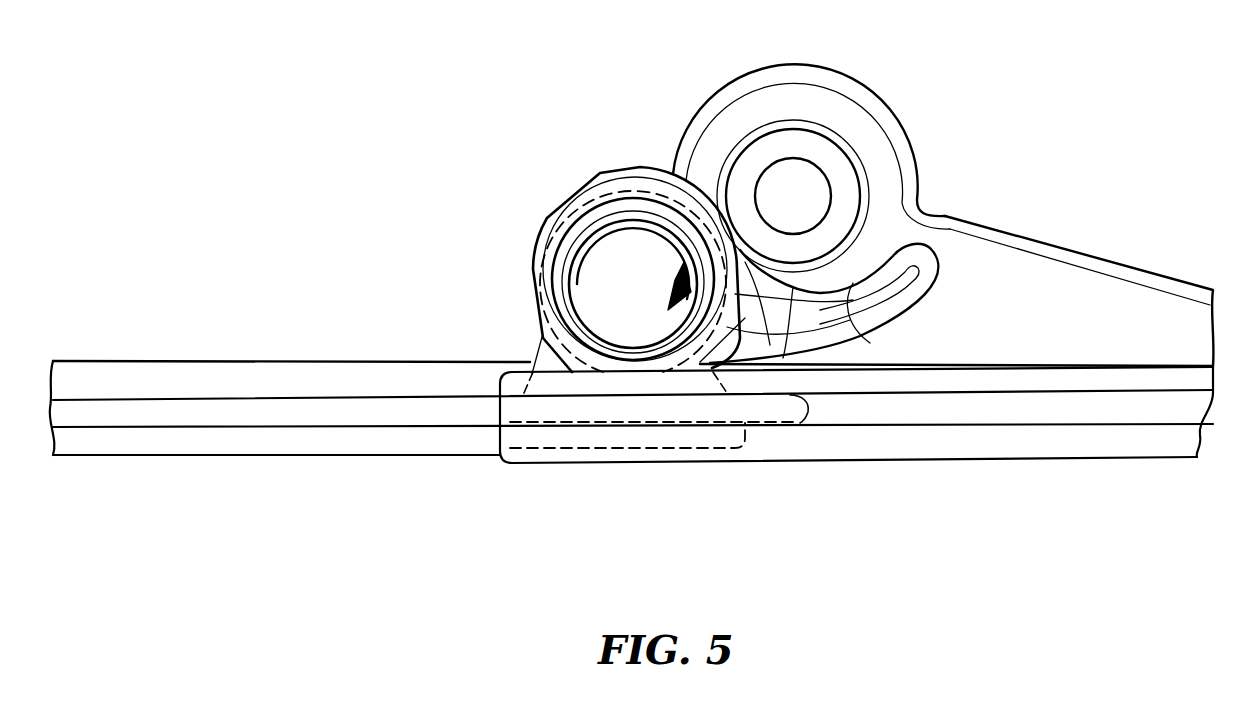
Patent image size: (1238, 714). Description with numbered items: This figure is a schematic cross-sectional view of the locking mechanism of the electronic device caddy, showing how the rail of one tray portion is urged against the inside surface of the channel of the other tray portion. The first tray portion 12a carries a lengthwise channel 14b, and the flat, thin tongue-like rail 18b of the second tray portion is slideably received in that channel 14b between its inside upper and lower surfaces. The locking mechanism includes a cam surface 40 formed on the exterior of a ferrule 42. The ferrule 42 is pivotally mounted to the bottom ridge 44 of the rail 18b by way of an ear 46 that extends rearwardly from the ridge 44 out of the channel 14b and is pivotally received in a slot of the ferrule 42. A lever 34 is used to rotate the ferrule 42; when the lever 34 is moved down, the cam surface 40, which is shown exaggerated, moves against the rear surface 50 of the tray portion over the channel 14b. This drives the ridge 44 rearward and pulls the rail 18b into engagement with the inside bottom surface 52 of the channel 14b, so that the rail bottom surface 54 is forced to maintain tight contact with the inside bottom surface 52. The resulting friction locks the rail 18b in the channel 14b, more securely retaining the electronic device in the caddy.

The first tray portion 12a is at (1122, 365).
The channel 14b is at (1128, 407).
The rail 18b is at (407, 415).
The lever 34 is at (927, 260).
The cam surface 40 is at (573, 197).
The ferrule 42 is at (627, 167).
The bottom ridge 44 is at (385, 373).
The ear 46 is at (532, 270).
The rear surface 50 is at (1020, 366).
The inside bottom surface 52 is at (973, 393).
The rail bottom surface 54 is at (752, 392).